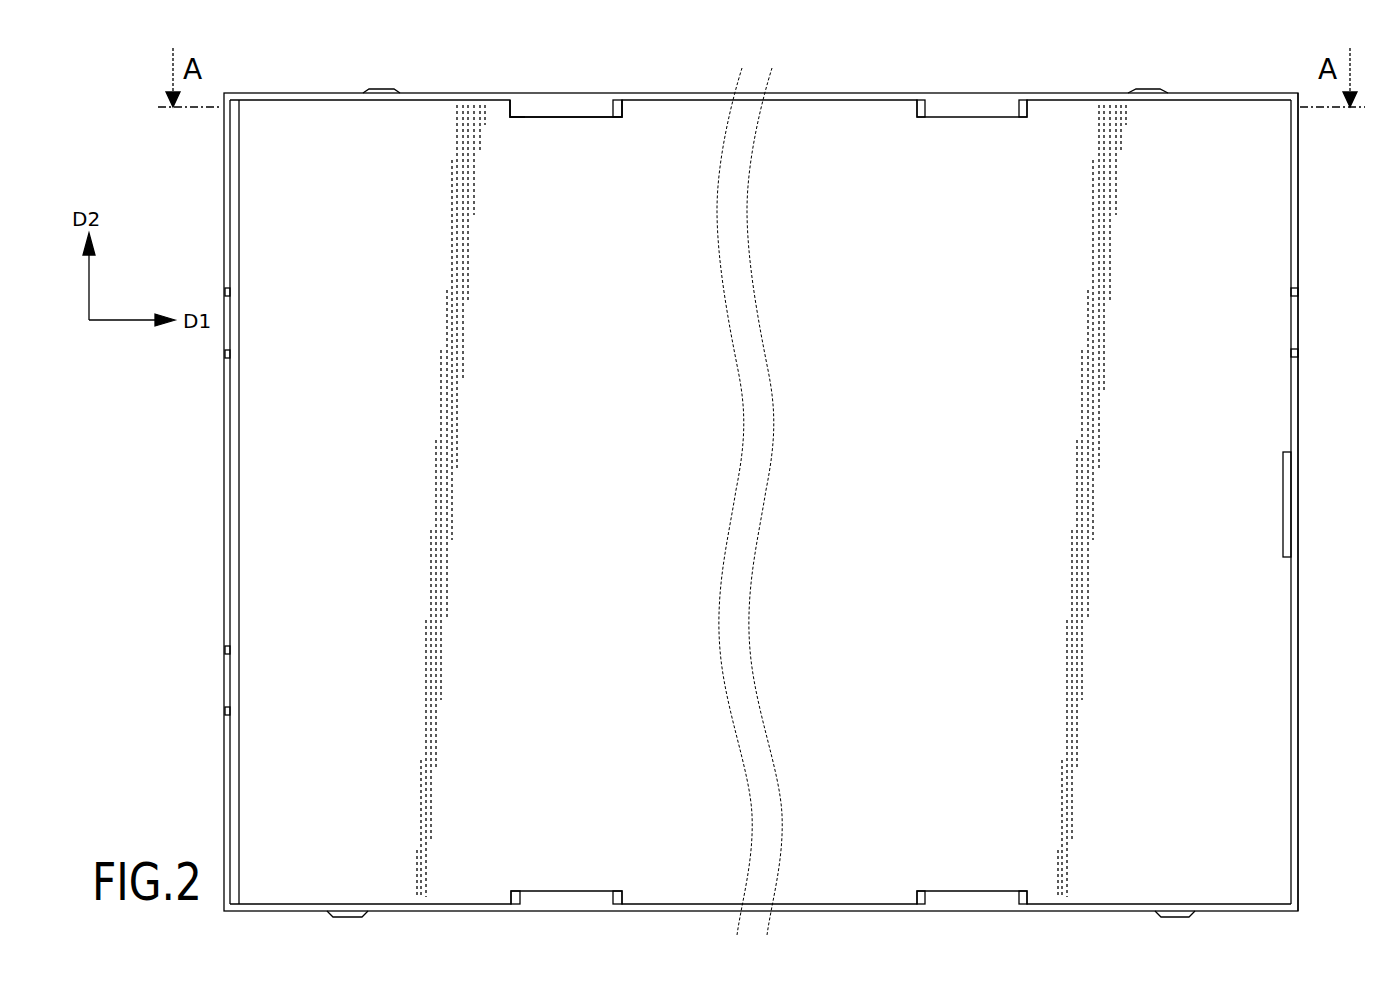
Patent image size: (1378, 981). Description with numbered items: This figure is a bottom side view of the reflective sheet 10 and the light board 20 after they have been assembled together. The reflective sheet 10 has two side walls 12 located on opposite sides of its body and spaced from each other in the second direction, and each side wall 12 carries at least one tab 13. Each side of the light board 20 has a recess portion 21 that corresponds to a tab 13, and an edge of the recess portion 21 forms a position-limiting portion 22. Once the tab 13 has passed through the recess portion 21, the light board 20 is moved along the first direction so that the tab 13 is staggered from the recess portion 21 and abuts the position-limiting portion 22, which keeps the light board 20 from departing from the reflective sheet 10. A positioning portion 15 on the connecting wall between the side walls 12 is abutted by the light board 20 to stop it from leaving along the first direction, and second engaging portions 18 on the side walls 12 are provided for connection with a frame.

The reflective sheet 10 is at (965, 82).
The side walls 12 is at (828, 95).
The tab 13 is at (563, 115).
The positioning portion 15 is at (1292, 500).
The second engaging portions 18 is at (1150, 91).
The light board 20 is at (1226, 266).
The recess portion 21 is at (617, 114).
The position-limiting portion 22 is at (517, 112).